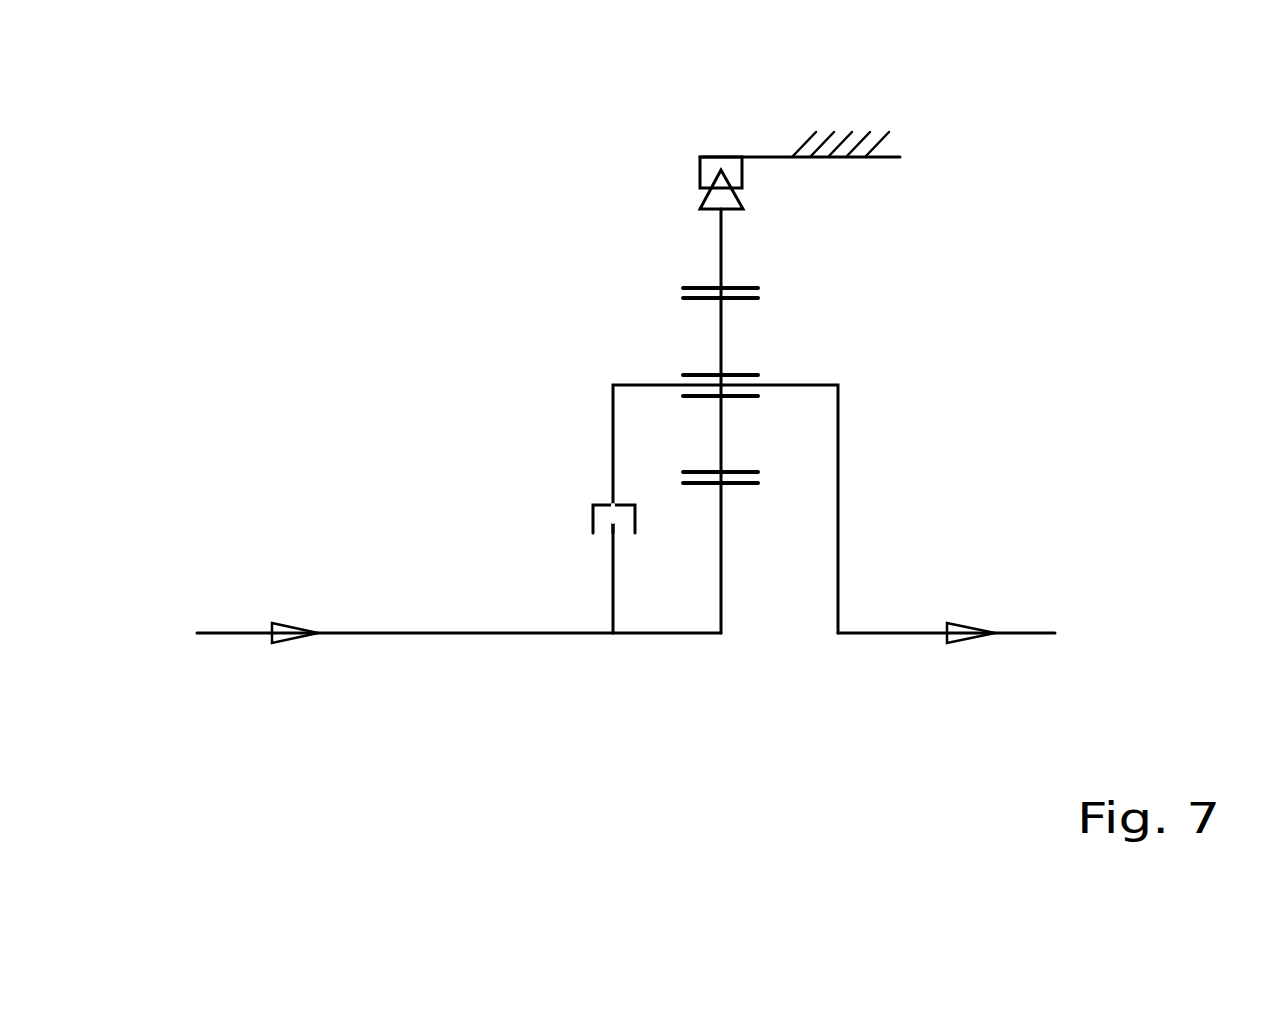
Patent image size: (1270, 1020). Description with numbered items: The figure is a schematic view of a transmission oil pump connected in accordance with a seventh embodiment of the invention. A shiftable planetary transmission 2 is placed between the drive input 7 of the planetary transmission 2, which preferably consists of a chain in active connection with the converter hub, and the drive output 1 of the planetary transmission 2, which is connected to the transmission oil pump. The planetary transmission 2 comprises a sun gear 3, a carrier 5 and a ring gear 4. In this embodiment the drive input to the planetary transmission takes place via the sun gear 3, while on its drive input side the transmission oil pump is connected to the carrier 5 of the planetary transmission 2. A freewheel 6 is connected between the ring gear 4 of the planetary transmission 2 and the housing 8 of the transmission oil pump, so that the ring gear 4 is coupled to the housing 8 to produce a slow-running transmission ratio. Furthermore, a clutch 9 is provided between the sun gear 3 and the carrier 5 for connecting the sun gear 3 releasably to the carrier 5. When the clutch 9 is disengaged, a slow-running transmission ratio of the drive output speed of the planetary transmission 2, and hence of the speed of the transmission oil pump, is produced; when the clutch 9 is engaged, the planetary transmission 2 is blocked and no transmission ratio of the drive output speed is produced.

The drive output of the planetary transmission 1 is at (918, 632).
The planetary transmission 2 is at (762, 358).
The sun gear 3 is at (721, 530).
The ring gear 4 is at (721, 271).
The carrier 5 is at (683, 382).
The freewheel 6 is at (700, 172).
The drive input of the planetary transmission 7 is at (492, 632).
The housing of the transmission oil pump 8 is at (852, 137).
The clutch 9 is at (603, 510).